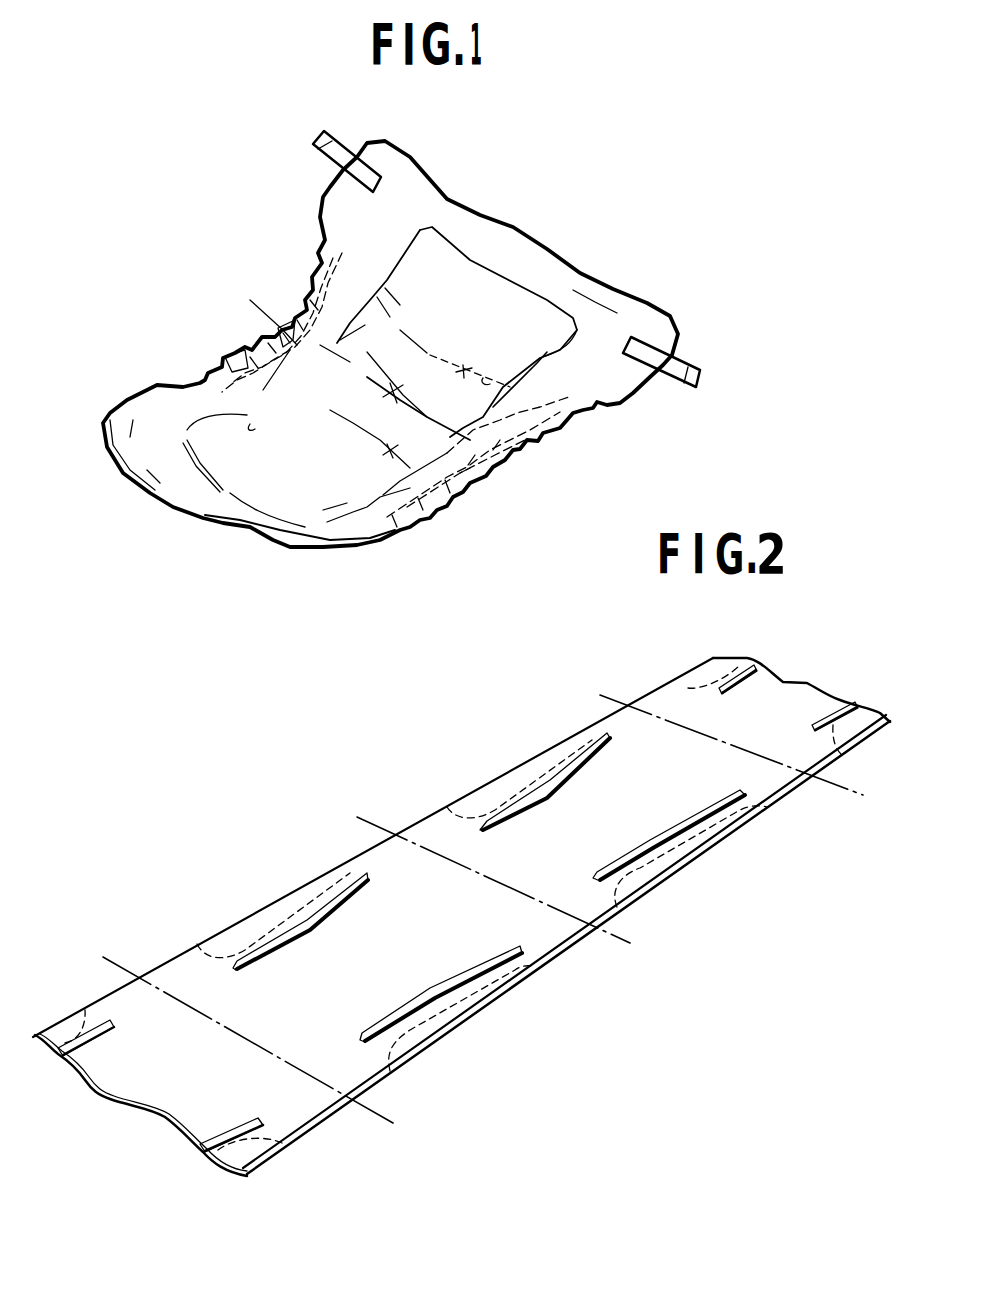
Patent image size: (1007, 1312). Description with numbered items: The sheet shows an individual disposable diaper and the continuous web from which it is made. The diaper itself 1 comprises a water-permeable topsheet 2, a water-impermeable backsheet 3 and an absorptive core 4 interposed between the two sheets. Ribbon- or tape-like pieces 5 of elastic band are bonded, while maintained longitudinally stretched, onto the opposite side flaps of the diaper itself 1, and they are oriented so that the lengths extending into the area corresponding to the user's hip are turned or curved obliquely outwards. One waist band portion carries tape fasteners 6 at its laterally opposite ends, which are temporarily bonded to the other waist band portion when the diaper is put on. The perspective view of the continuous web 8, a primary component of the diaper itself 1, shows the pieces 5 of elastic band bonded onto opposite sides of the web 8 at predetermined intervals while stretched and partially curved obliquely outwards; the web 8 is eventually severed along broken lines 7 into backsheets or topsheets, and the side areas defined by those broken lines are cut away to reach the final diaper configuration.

In FIG. 1, the diaper itself 1 is at (542, 226).
In FIG. 2, the diaper itself 1 is at (363, 863).
In FIG. 1, the water-permeable topsheet 2 is at (143, 417).
In FIG. 1, the water-impermeable backsheet 3 is at (297, 530).
In FIG. 1, the absorptive core 4 is at (543, 318).
In FIG. 1, the pieces of elastic band 5 is at (285, 343).
In FIG. 2, the pieces of elastic band 5 is at (270, 950).
In FIG. 1, the tape fasteners 6 is at (337, 160).
In FIG. 2, the broken lines 7 is at (375, 1117).
In FIG. 2, the continuous web 8 is at (325, 727).